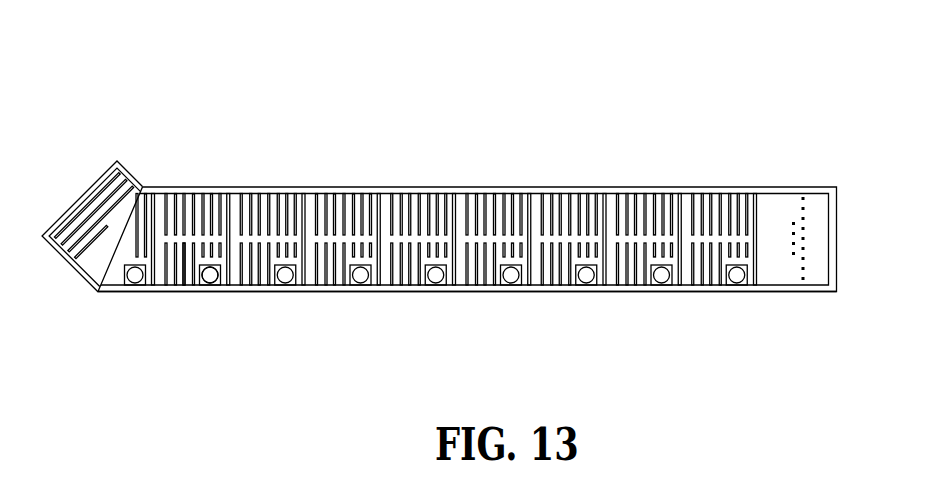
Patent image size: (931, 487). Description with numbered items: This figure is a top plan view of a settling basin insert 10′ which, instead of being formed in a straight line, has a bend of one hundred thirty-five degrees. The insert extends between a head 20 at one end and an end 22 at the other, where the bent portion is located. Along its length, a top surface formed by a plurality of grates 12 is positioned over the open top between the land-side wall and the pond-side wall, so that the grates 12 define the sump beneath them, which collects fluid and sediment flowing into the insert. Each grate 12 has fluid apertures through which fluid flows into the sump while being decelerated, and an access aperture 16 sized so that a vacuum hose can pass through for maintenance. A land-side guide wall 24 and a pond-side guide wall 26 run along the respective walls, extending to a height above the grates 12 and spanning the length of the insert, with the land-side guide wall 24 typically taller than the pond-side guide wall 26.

The settling basin insert 10′ is at (499, 81).
The grate 12 is at (198, 197).
The access aperture 16 is at (210, 284).
The head 20 is at (831, 288).
The end 22 is at (85, 193).
The land-side guide wall 24 is at (738, 293).
The pond-side guide wall 26 is at (328, 192).